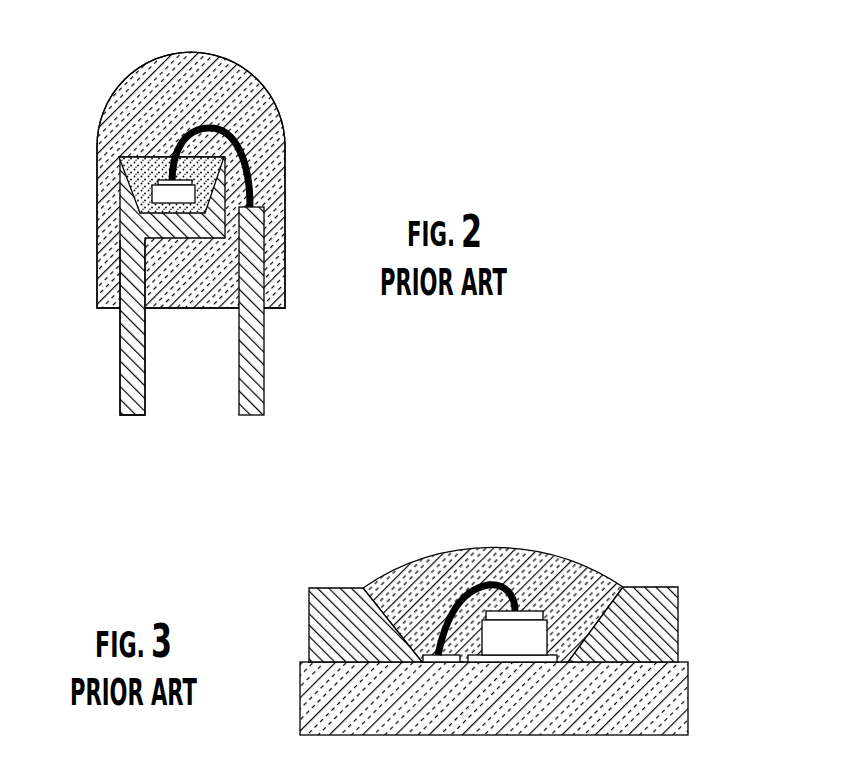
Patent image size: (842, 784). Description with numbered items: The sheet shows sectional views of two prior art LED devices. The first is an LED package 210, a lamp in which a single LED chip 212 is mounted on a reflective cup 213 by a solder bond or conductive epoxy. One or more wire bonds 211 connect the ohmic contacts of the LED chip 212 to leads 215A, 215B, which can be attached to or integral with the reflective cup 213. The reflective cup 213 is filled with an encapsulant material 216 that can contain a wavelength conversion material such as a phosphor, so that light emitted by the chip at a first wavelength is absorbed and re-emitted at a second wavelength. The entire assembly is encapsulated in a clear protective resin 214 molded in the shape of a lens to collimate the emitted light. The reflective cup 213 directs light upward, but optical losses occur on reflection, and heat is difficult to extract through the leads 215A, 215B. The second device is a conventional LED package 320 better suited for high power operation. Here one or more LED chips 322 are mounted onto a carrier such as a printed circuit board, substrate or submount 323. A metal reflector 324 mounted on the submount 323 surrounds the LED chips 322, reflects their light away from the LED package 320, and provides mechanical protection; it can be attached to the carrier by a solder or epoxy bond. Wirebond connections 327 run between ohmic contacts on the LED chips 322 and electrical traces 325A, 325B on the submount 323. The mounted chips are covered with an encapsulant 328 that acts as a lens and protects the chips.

In FIG. 2, the LED package 210 is at (310, 81).
In FIG. 2, the wire bond 211 is at (285, 168).
In FIG. 2, the LED chip 212 is at (160, 192).
In FIG. 2, the reflective cup 213 is at (127, 225).
In FIG. 2, the clear protective resin 214 is at (235, 60).
In FIG. 2, the lead 215A is at (120, 347).
In FIG. 2, the lead 215B is at (264, 347).
In FIG. 2, the encapsulant material 216 is at (133, 160).
In FIG. 3, the LED package 320 is at (616, 559).
In FIG. 3, the LED chip 322 is at (533, 637).
In FIG. 3, the submount 323 is at (300, 710).
In FIG. 3, the metal reflector 324 is at (309, 628).
In FIG. 3, the electrical trace 325A is at (437, 655).
In FIG. 3, the electrical trace 325B is at (541, 662).
In FIG. 3, the wirebond connection 327 is at (480, 583).
In FIG. 3, the encapsulant dome 328 is at (545, 552).